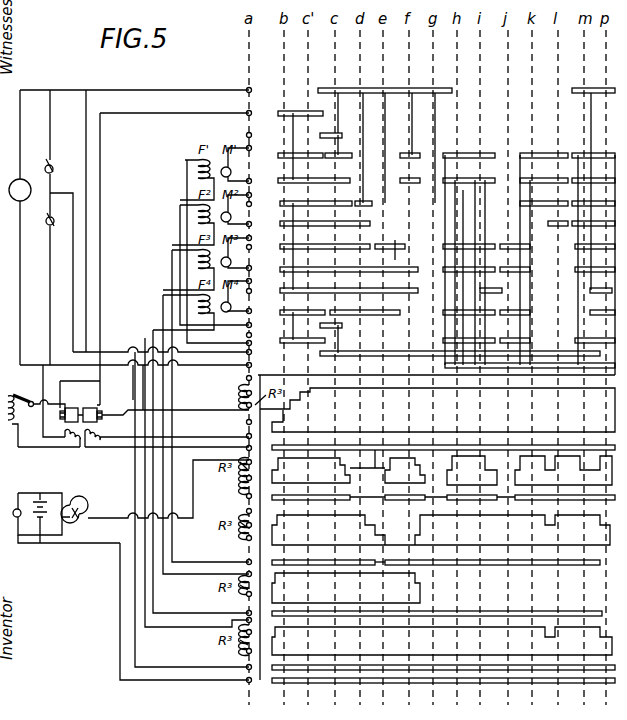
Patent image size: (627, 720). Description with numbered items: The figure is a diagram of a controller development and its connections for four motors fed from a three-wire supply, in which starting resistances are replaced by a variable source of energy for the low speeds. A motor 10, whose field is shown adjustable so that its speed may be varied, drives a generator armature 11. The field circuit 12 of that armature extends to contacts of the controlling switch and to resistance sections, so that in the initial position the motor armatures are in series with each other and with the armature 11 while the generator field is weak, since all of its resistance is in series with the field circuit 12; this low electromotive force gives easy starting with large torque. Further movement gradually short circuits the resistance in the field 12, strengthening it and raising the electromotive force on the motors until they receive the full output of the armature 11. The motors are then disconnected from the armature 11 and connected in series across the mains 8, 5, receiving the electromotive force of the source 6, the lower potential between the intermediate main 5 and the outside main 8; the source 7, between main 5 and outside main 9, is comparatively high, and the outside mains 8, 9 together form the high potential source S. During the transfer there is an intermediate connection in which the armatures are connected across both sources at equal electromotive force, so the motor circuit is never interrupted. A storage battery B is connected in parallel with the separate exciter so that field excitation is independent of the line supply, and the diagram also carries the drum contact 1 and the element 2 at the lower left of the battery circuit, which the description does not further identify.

The circuit breaker switch 1 is at (18, 454).
The relay 2 is at (155, 499).
The intermediate main 5 is at (118, 346).
The source 6 is at (54, 162).
The source 7 is at (44, 224).
The outside main 8 is at (134, 238).
The outside main 9 is at (134, 370).
The motor 10 is at (63, 424).
The generator armature 11 is at (90, 407).
The field circuit 12 is at (92, 450).
The source S is at (20, 190).
The storage battery B is at (40, 504).